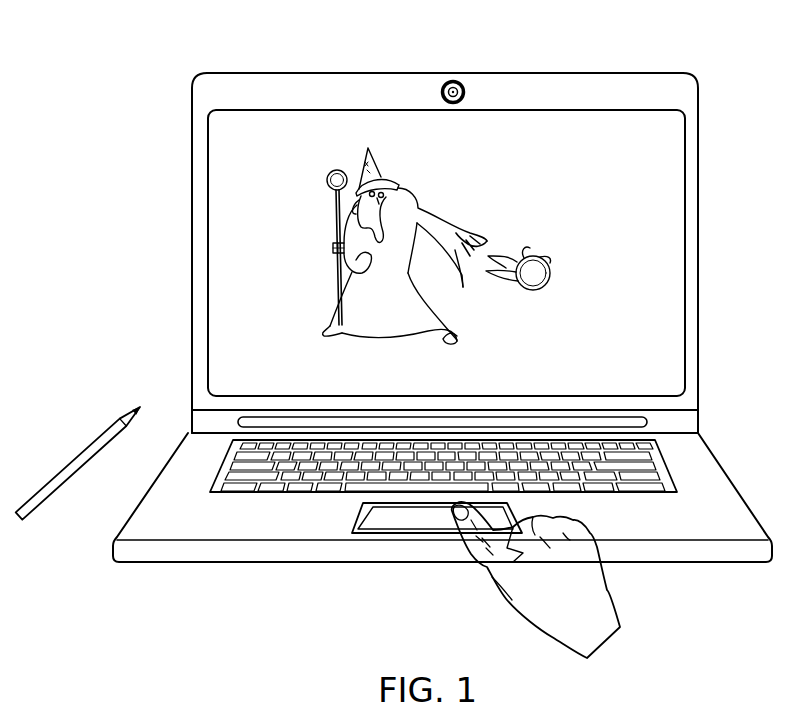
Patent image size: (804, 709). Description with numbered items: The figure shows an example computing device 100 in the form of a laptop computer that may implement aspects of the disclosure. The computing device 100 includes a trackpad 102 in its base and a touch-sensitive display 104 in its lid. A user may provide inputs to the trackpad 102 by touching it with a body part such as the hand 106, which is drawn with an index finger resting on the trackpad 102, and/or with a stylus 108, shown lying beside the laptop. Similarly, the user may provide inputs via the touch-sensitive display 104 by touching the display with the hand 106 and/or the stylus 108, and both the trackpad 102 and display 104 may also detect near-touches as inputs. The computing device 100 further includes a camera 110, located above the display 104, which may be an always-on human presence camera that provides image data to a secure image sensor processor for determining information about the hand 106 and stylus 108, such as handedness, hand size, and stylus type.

The computing device 100 is at (128, 60).
The trackpad 102 is at (388, 520).
The touch-sensitive display 104 is at (634, 173).
The hand 106 is at (470, 554).
The stylus 108 is at (80, 452).
The camera 110 is at (458, 77).